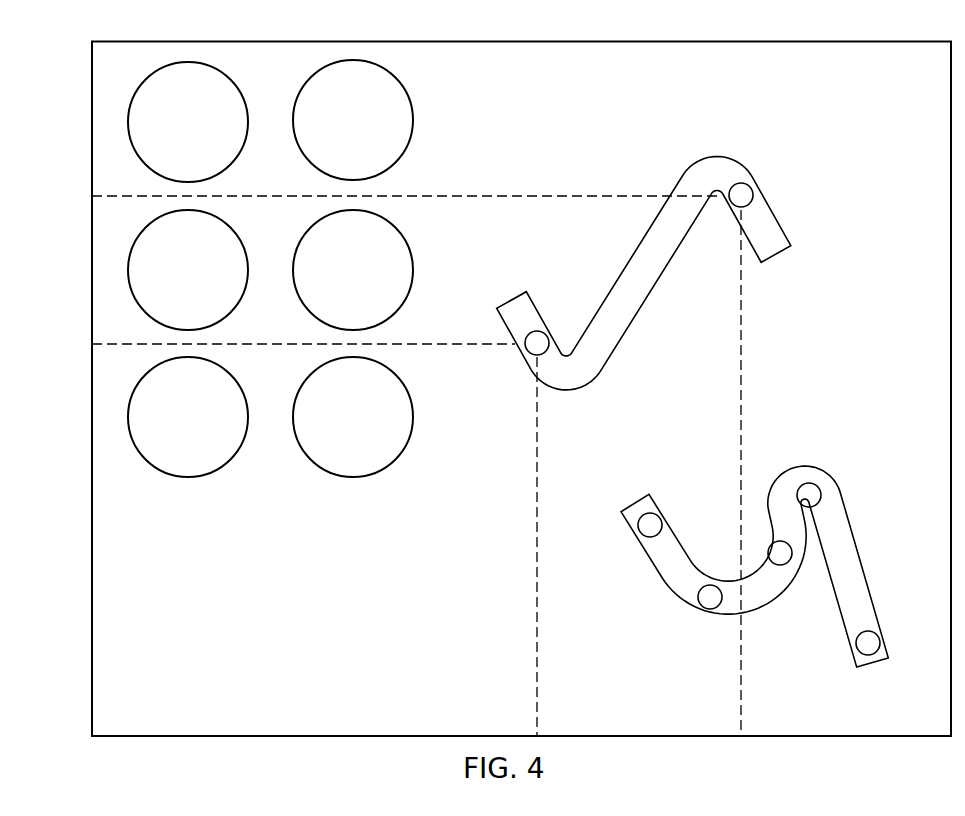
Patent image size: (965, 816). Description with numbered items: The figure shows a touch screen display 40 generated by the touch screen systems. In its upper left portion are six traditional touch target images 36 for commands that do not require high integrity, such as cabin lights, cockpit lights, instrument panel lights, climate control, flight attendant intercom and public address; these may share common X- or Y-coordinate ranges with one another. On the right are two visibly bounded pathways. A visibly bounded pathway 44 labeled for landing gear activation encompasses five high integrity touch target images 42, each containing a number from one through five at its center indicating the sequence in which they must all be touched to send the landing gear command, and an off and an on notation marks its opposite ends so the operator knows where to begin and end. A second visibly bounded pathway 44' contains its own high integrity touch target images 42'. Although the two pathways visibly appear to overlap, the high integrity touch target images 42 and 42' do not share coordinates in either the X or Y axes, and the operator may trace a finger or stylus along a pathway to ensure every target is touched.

The touch target image 36 is at (232, 78).
The touch screen display 40 is at (92, 137).
The high integrity touch target image 42 is at (774, 546).
The high integrity touch target image 42' is at (668, 265).
The visibly bounded pathway 44 is at (761, 591).
The second visibly bounded pathway 44' is at (644, 252).